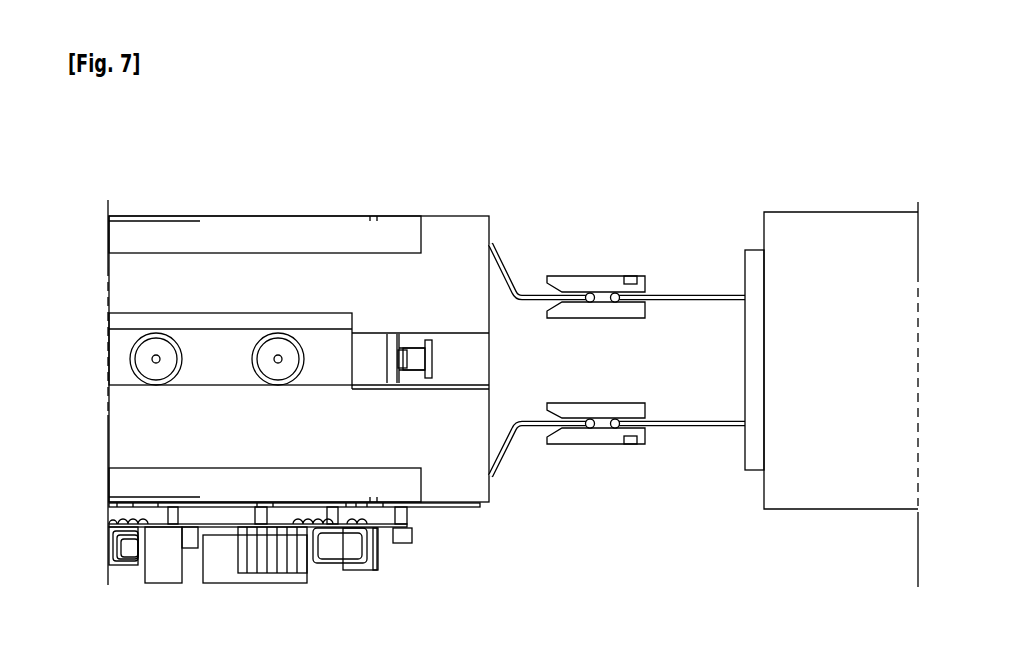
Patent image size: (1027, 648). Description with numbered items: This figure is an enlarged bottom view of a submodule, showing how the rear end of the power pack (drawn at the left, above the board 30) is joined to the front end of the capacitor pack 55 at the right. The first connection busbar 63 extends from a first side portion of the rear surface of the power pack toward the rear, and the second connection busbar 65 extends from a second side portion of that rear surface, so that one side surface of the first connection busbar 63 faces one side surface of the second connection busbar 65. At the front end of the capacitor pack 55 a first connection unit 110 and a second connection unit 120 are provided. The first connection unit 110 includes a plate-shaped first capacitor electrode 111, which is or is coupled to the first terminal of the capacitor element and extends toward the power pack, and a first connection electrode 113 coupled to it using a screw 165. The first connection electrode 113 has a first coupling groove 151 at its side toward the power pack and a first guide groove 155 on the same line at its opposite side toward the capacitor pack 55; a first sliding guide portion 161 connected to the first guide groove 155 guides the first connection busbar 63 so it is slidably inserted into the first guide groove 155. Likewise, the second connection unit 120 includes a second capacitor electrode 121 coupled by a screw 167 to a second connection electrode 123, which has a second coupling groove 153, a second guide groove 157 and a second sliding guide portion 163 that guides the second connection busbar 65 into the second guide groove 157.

The circuit board assembly 30 is at (458, 591).
The capacitor pack 55 is at (845, 189).
The first connection busbar 63 is at (513, 252).
The second connection busbar 65 is at (512, 464).
The first connection unit 110 is at (620, 228).
The first capacitor electrode 111 is at (687, 293).
The first connection electrode 113 is at (586, 247).
The second connection unit 120 is at (620, 494).
The second capacitor electrode 121 is at (687, 429).
The second connection electrode 123 is at (585, 475).
The first coupling groove 151 is at (624, 304).
The second coupling groove 153 is at (626, 412).
The first guide groove 155 is at (563, 290).
The second guide groove 157 is at (563, 445).
The first sliding guide portion 161 is at (546, 305).
The second sliding guide portion 163 is at (543, 412).
The screw 165 is at (632, 276).
The screw 167 is at (628, 445).